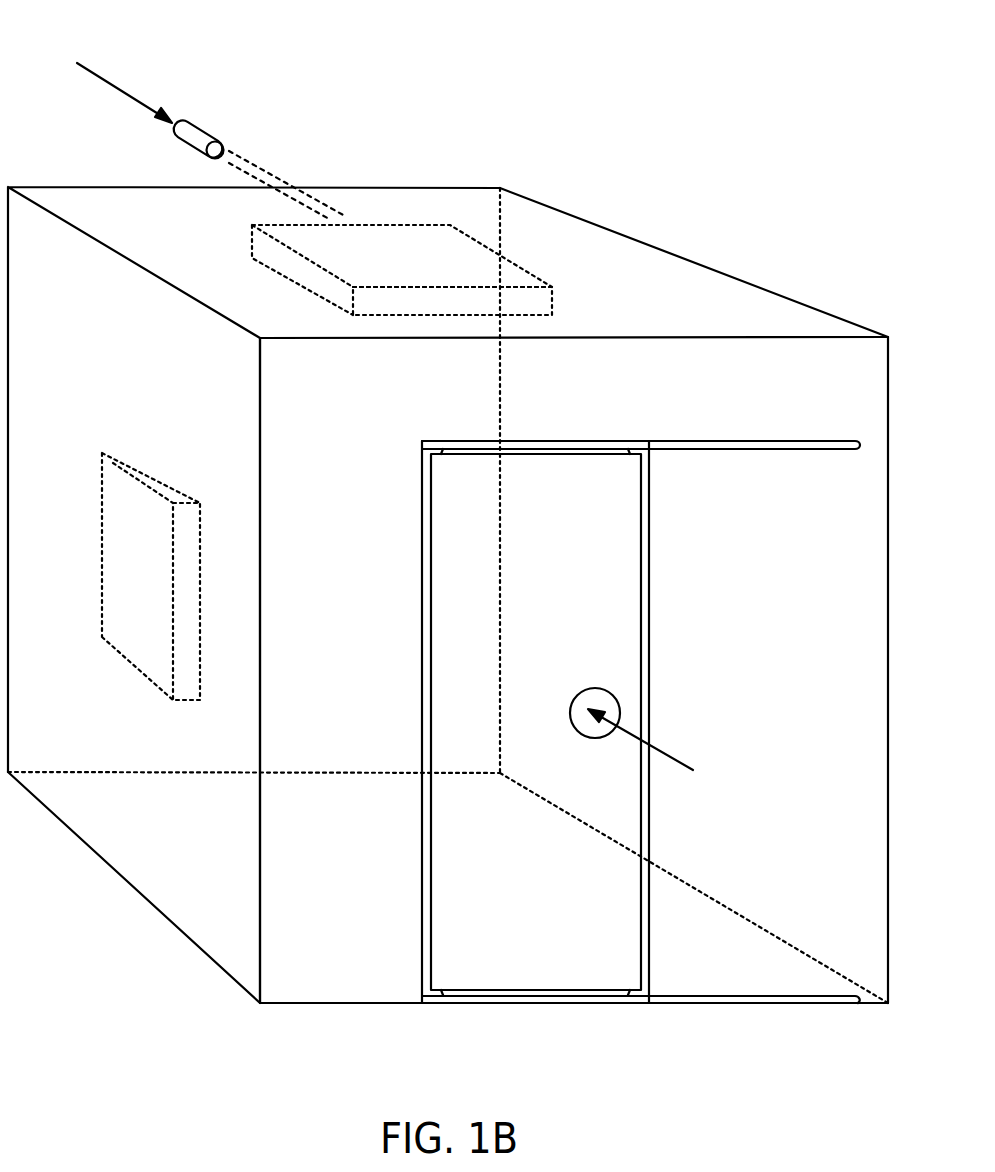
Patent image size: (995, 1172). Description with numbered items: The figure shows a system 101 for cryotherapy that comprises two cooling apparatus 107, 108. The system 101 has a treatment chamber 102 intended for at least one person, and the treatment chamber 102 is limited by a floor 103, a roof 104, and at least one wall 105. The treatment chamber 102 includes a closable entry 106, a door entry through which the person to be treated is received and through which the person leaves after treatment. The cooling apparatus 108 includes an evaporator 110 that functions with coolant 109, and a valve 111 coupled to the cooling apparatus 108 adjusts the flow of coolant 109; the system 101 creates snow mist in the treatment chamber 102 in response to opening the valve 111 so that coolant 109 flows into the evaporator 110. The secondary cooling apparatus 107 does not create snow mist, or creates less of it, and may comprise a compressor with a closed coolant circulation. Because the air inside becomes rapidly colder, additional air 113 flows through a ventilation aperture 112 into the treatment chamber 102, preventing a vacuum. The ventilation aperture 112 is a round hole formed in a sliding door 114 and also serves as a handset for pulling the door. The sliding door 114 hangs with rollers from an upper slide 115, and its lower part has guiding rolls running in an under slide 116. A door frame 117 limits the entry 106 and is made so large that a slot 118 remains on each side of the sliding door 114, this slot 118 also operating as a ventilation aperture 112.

The system 101 is at (500, 158).
The treatment chamber 102 is at (348, 606).
The floor 103 is at (300, 855).
The roof 104 is at (607, 302).
The wall 105 is at (137, 877).
The entry 106 is at (528, 878).
The secondary cooling apparatus 107 is at (118, 457).
The cooling apparatus 108 is at (290, 187).
The coolant 109 is at (77, 63).
The evaporator 110 is at (430, 272).
The valve 111 is at (208, 128).
The ventilation aperture 112 is at (590, 694).
The additional air 113 is at (688, 769).
The sliding door 114 is at (563, 570).
The upper slide 115 is at (823, 452).
The under slide 116 is at (702, 992).
The door frame 117 is at (650, 573).
The slot 118 is at (648, 645).